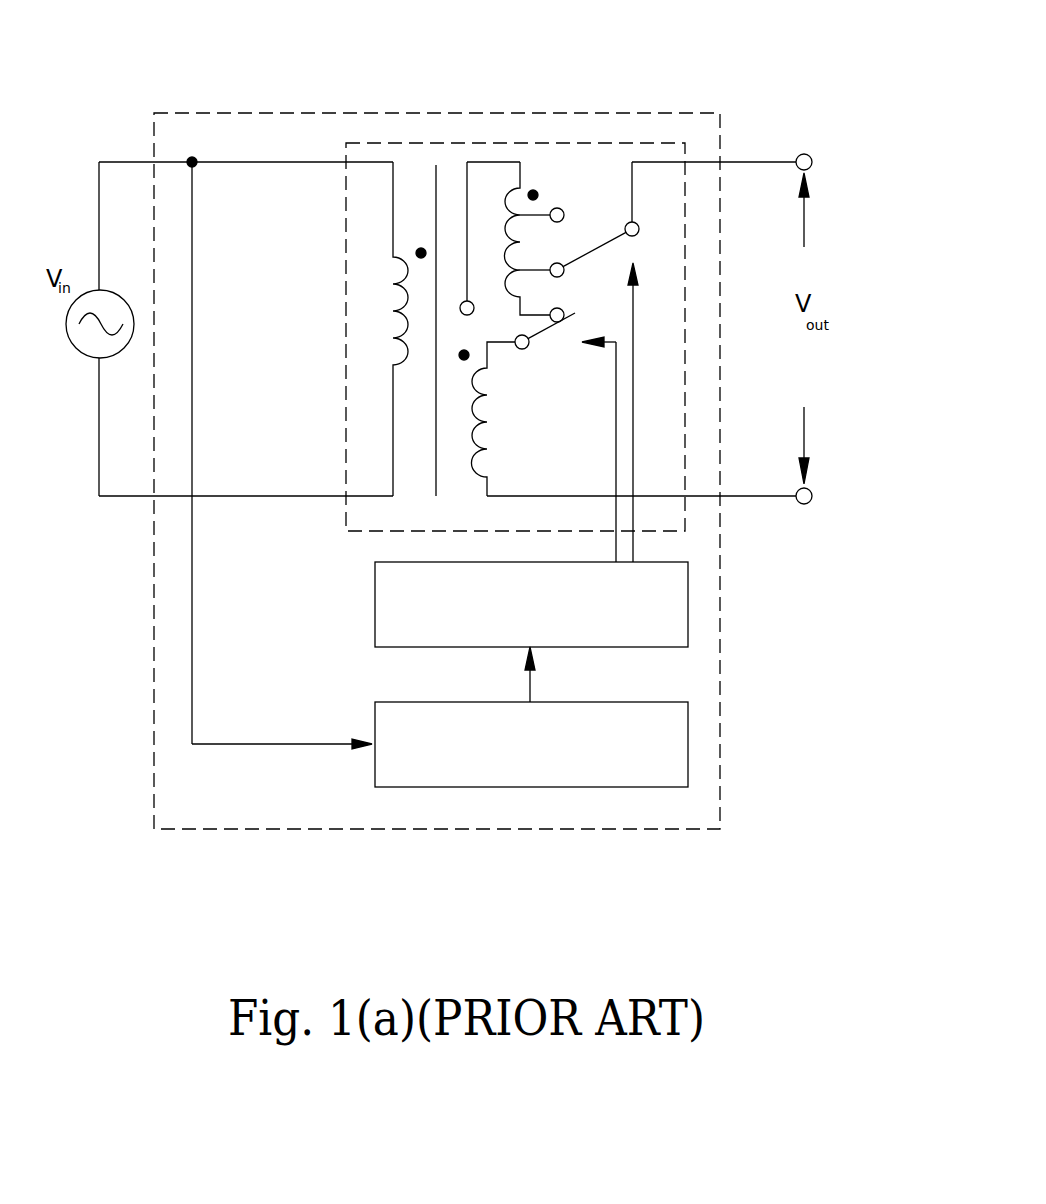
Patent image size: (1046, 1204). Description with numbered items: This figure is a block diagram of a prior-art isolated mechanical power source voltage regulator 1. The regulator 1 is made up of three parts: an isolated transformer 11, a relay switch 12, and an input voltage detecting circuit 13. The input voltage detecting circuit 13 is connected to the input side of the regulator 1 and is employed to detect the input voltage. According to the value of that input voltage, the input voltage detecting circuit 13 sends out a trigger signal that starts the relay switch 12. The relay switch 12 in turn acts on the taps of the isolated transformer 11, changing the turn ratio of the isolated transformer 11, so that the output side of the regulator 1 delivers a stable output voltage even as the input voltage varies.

The isolated mechanical power source voltage regulator 1 is at (218, 139).
The isolated transformer 11 is at (594, 170).
The relay switch 12 is at (395, 599).
The input voltage detecting circuit 13 is at (395, 730).